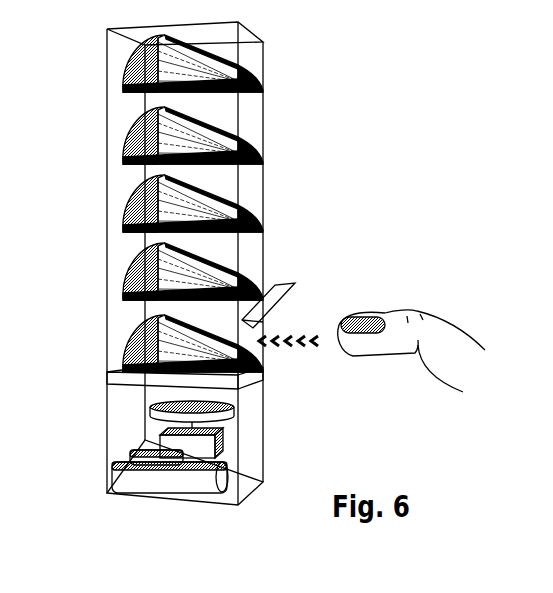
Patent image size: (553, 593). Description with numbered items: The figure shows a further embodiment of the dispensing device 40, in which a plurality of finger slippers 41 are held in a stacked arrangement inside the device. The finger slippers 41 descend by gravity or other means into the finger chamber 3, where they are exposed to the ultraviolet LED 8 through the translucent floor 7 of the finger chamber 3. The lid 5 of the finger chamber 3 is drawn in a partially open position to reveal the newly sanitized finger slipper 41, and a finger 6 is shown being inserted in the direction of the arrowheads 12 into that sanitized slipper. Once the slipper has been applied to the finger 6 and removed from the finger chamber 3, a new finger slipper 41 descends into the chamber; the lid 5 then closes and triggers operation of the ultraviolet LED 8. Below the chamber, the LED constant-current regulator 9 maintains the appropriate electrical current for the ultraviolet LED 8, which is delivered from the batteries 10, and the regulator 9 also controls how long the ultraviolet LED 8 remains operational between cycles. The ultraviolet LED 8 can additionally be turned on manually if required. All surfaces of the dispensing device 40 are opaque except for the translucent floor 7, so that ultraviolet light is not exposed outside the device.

The dispensing device 40 is at (292, 166).
The finger slippers 41 is at (123, 83).
The translucent floor 7 is at (243, 377).
The ultraviolet LED 8 is at (150, 414).
The LED constant-current regulator 9 is at (183, 445).
The batteries 10 is at (148, 480).
The lid 5 is at (285, 283).
The finger chamber 3 is at (267, 322).
The arrowheads 12 is at (292, 352).
The finger 6 is at (372, 312).